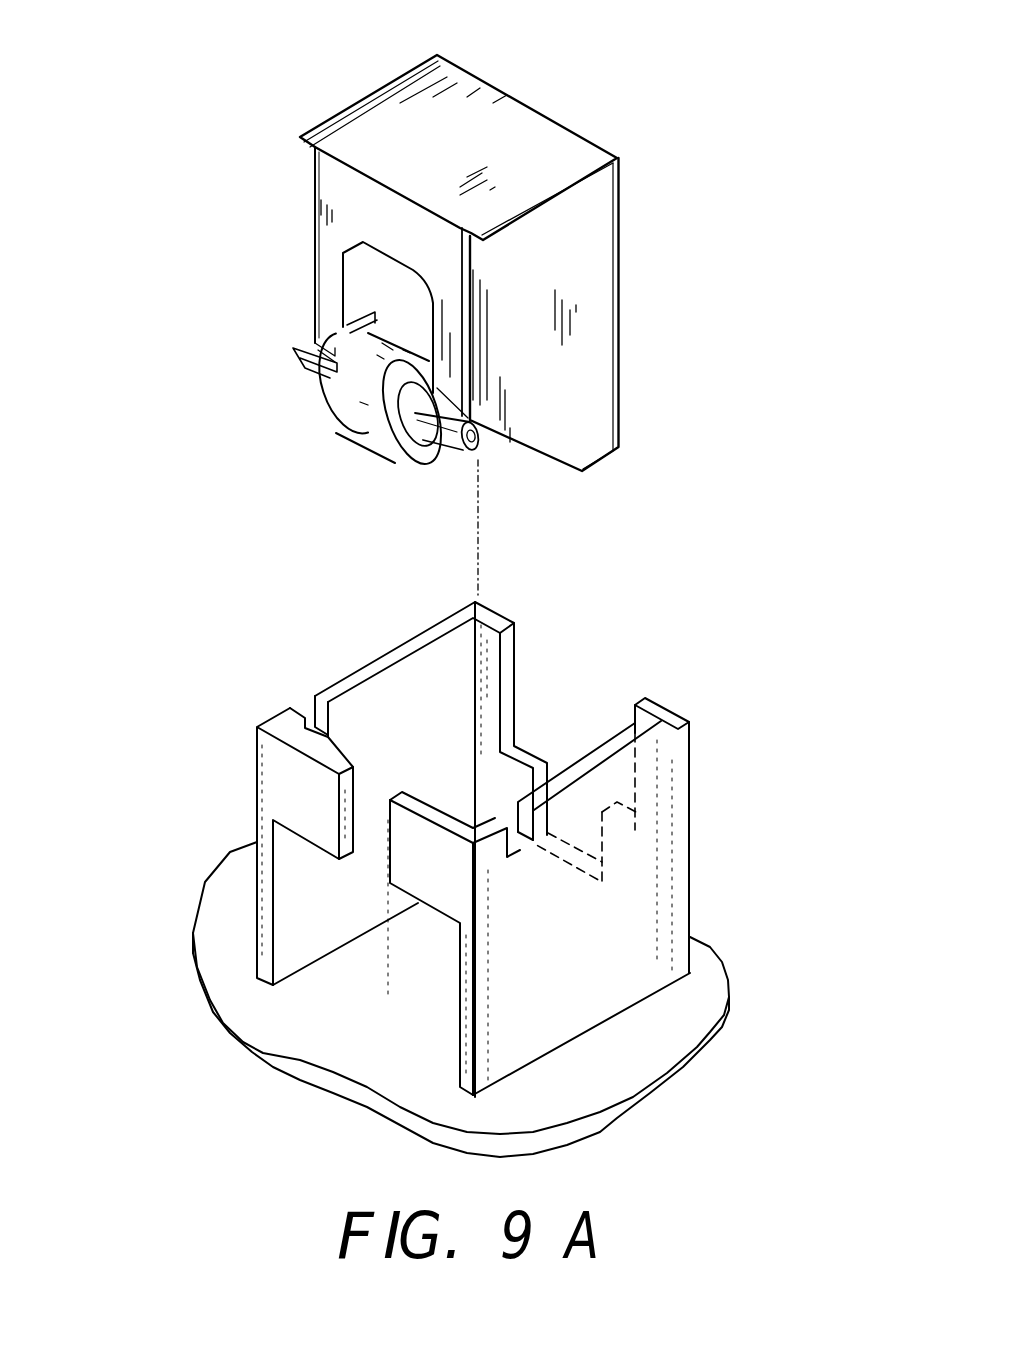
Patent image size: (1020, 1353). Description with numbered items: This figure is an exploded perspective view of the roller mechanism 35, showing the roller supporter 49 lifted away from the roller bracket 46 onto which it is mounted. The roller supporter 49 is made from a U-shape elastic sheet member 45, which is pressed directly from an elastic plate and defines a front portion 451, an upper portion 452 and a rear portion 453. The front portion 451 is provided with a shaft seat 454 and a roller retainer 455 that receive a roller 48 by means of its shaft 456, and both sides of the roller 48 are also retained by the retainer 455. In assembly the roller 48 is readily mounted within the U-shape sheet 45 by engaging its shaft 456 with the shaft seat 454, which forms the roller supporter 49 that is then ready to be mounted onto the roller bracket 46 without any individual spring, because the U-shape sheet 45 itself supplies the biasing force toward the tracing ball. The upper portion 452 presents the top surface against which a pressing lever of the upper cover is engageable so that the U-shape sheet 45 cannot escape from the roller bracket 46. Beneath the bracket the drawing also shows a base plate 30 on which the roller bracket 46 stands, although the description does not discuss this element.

The sensor assembly 49 is at (230, 80).
The sensor housing 45 is at (570, 114).
The top wall of housing 452 is at (355, 128).
The front wall of housing 451 is at (323, 212).
The side wall of housing 453 is at (600, 392).
The opening in front wall 455 is at (362, 300).
The lead pins 456 is at (295, 350).
The sensor element 48 is at (360, 417).
The bushing 454 is at (442, 445).
The mounting assembly 35 is at (168, 160).
The mounting bracket 46 is at (733, 750).
The base plate 30 is at (355, 1050).